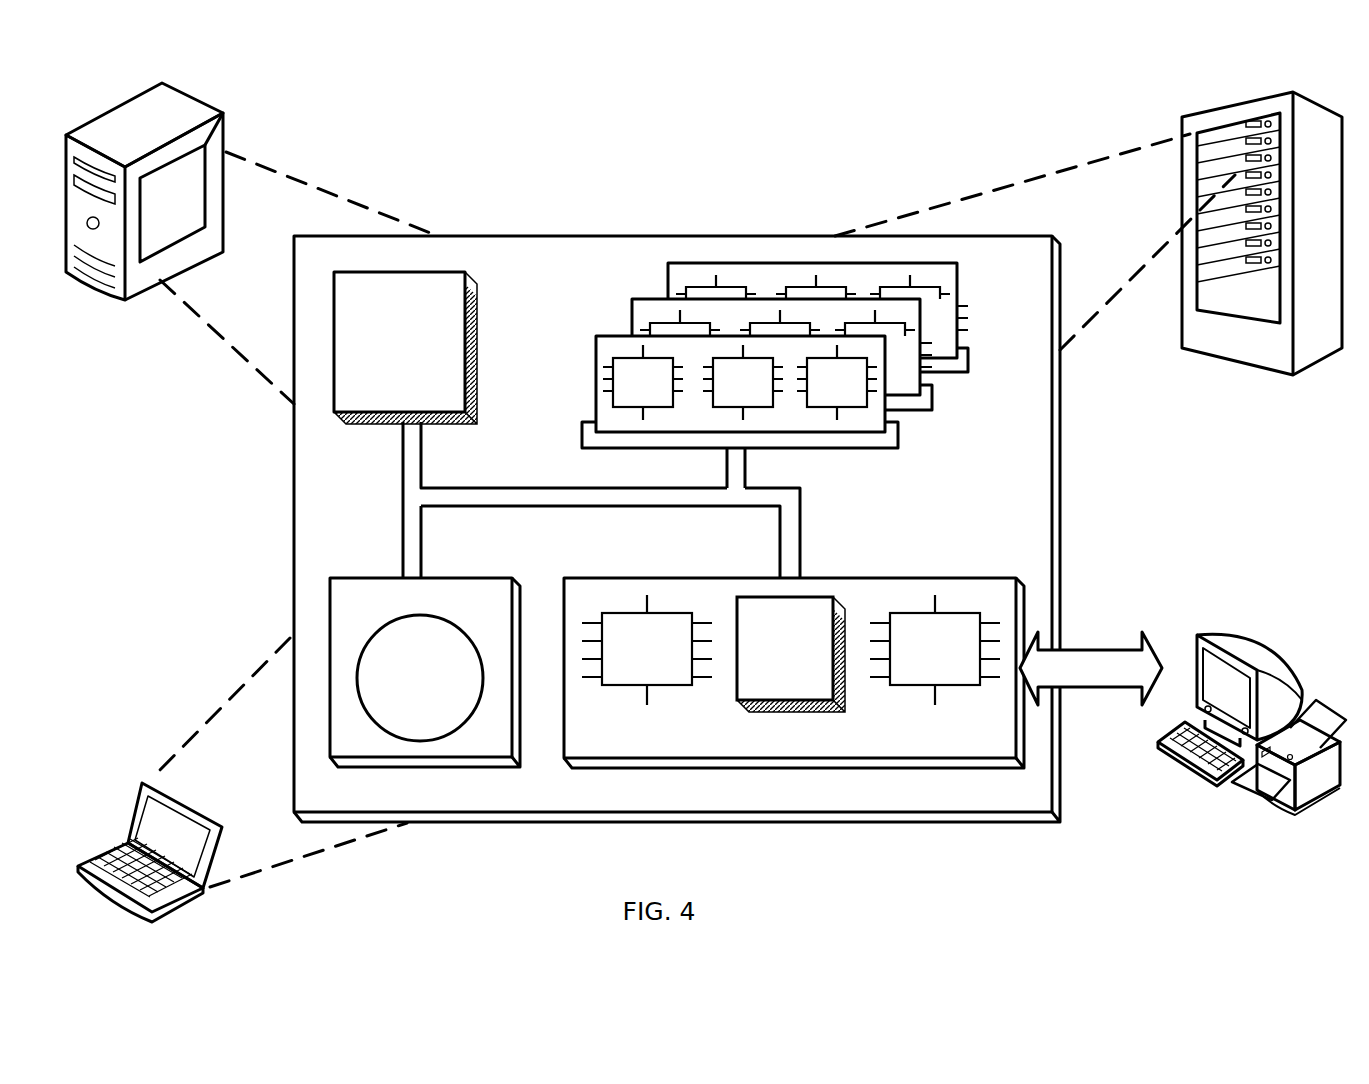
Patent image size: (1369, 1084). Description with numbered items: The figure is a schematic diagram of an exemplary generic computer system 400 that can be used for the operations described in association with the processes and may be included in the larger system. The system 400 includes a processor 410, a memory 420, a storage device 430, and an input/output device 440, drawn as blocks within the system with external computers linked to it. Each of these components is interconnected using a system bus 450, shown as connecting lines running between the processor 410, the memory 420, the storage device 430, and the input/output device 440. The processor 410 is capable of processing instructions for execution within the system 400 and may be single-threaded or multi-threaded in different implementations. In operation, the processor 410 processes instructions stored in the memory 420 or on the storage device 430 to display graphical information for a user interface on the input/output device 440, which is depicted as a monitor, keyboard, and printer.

The system 400 is at (676, 98).
The processor 410 is at (418, 402).
The memory 420 is at (963, 411).
The storage device 430 is at (497, 748).
The input/output device 440 is at (1198, 641).
The system bus 450 is at (598, 506).